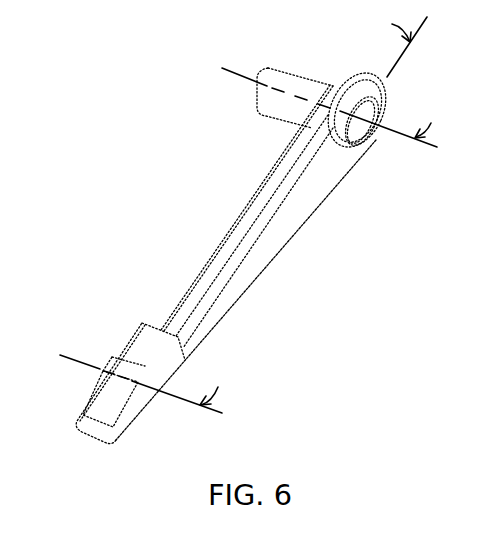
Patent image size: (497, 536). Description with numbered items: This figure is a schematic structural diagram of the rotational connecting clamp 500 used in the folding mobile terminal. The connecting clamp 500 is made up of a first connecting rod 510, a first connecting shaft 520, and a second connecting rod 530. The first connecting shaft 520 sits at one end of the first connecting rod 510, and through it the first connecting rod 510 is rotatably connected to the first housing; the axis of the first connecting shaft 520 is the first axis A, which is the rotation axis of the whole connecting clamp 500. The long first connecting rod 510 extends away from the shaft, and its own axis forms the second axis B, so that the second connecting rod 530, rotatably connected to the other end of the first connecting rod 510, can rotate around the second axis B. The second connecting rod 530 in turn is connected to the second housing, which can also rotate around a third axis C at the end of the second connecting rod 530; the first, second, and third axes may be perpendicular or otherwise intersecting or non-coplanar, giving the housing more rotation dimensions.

The connecting clamp 500 is at (115, 185).
The first connecting rod 510 is at (240, 244).
The first connecting shaft 520 is at (273, 95).
The second connecting rod 530 is at (138, 350).